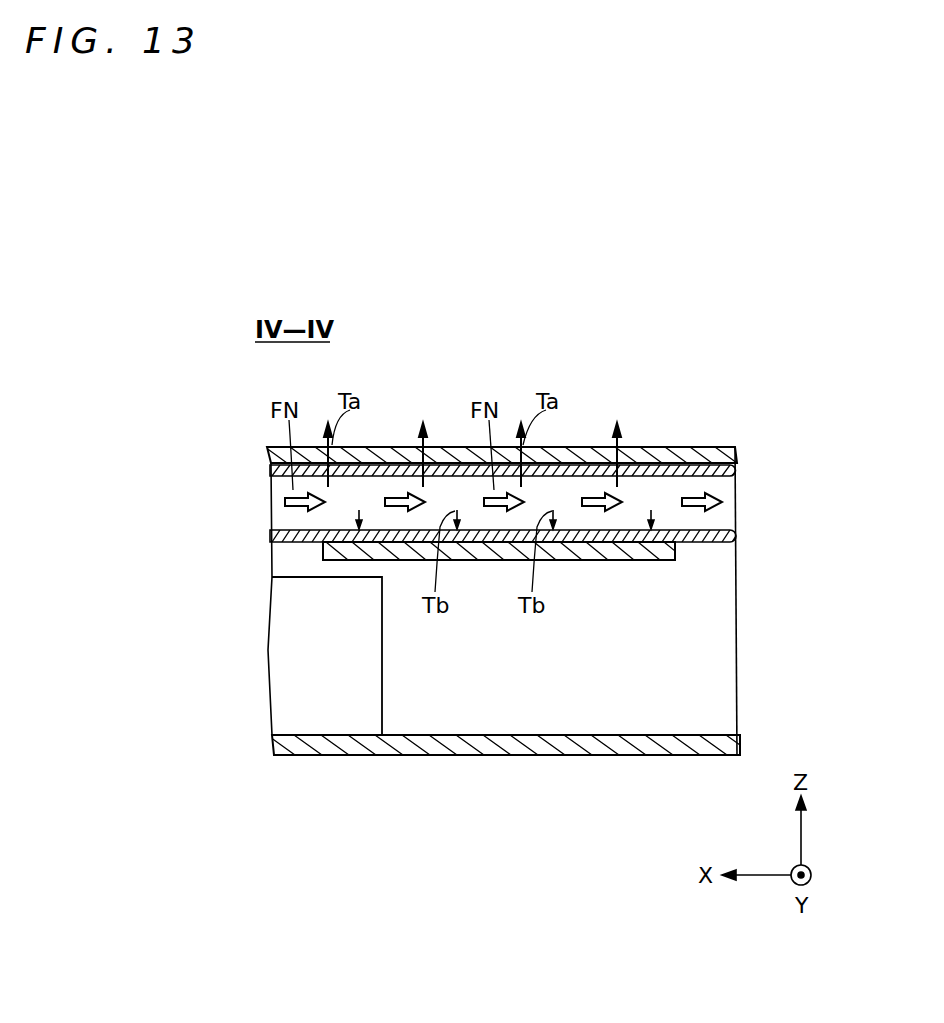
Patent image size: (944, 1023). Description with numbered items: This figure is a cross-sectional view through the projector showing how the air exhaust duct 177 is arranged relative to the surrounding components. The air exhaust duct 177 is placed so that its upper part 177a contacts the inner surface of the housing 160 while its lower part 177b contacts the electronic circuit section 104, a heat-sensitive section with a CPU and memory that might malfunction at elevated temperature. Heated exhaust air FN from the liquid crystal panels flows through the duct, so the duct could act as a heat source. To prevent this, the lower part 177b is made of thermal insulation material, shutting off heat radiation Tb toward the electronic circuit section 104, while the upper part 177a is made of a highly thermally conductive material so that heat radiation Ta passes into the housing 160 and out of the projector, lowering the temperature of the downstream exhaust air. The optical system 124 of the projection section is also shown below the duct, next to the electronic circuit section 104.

The housing 160 is at (682, 445).
The air exhaust duct 177 is at (582, 503).
The upper part of the air exhaust duct 177a is at (723, 477).
The lower part of the air exhaust duct 177b is at (723, 528).
The electronic circuit section 104 is at (588, 561).
The optical system 124 is at (382, 655).